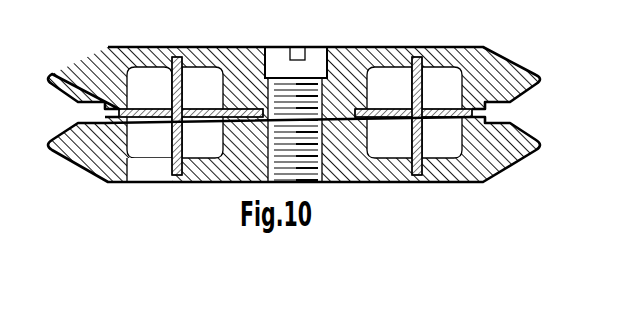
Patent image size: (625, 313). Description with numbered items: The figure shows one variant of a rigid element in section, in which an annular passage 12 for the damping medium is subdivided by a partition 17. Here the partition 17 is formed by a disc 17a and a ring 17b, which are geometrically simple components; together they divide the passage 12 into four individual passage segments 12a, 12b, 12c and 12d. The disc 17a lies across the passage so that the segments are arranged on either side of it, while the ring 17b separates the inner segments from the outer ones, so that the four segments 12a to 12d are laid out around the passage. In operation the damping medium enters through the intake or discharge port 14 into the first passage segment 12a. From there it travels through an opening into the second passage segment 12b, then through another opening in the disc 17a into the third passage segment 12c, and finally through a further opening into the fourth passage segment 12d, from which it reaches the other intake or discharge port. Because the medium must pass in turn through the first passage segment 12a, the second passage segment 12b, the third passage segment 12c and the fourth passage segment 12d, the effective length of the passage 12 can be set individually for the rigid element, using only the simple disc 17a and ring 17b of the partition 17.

The annular passage 12 is at (147, 74).
The first passage segment 12a is at (450, 148).
The second passage segment 12b is at (392, 148).
The third passage segment 12c is at (382, 74).
The fourth passage segment 12d is at (442, 77).
The intake or discharge port 14 is at (150, 170).
The partition 17 is at (452, 116).
The disc 17a is at (209, 108).
The ring 17b is at (178, 57).